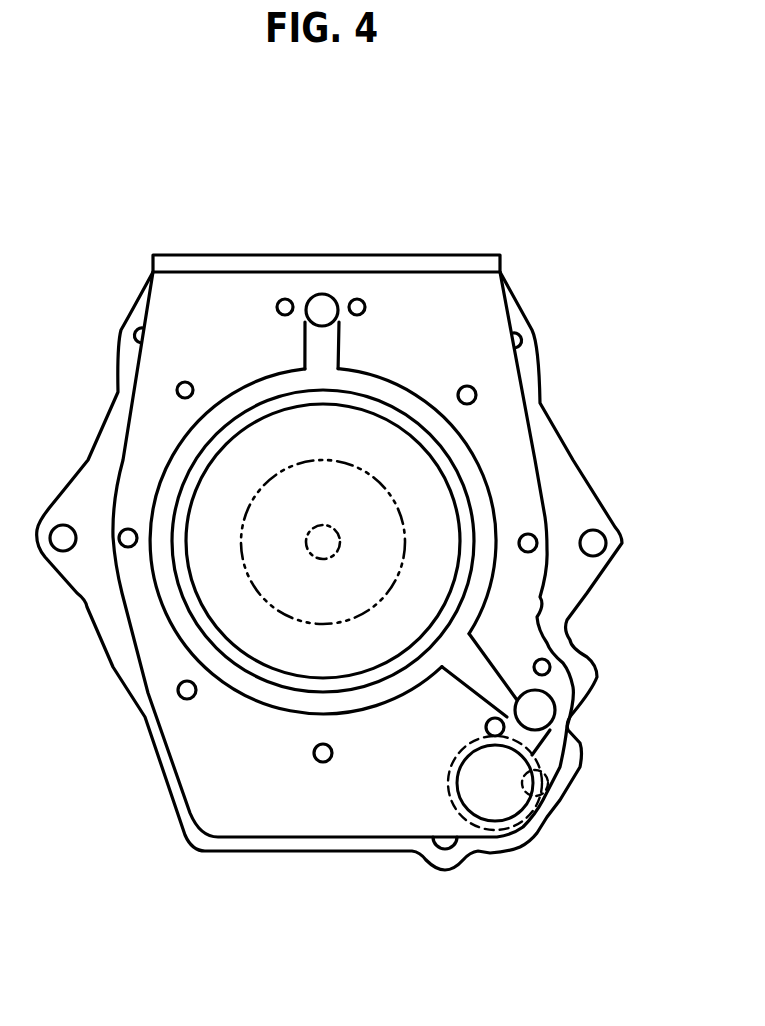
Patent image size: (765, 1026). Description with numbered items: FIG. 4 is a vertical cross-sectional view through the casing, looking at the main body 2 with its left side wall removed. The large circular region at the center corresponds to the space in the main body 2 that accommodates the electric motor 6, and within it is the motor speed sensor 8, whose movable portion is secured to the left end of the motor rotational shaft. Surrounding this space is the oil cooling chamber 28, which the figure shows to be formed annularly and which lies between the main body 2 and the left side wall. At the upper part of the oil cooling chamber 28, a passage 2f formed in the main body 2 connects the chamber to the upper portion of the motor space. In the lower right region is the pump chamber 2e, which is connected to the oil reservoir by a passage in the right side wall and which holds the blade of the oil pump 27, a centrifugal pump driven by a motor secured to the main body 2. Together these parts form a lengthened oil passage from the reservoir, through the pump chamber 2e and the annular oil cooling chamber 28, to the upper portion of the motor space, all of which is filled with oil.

The main body 2 is at (513, 293).
The pump chamber 2e is at (558, 795).
The passage 2f is at (328, 295).
The electric motor 6 is at (313, 558).
The motor speed sensor 8 is at (242, 540).
The oil pump 27 is at (510, 803).
The oil cooling chamber 28 is at (203, 440).